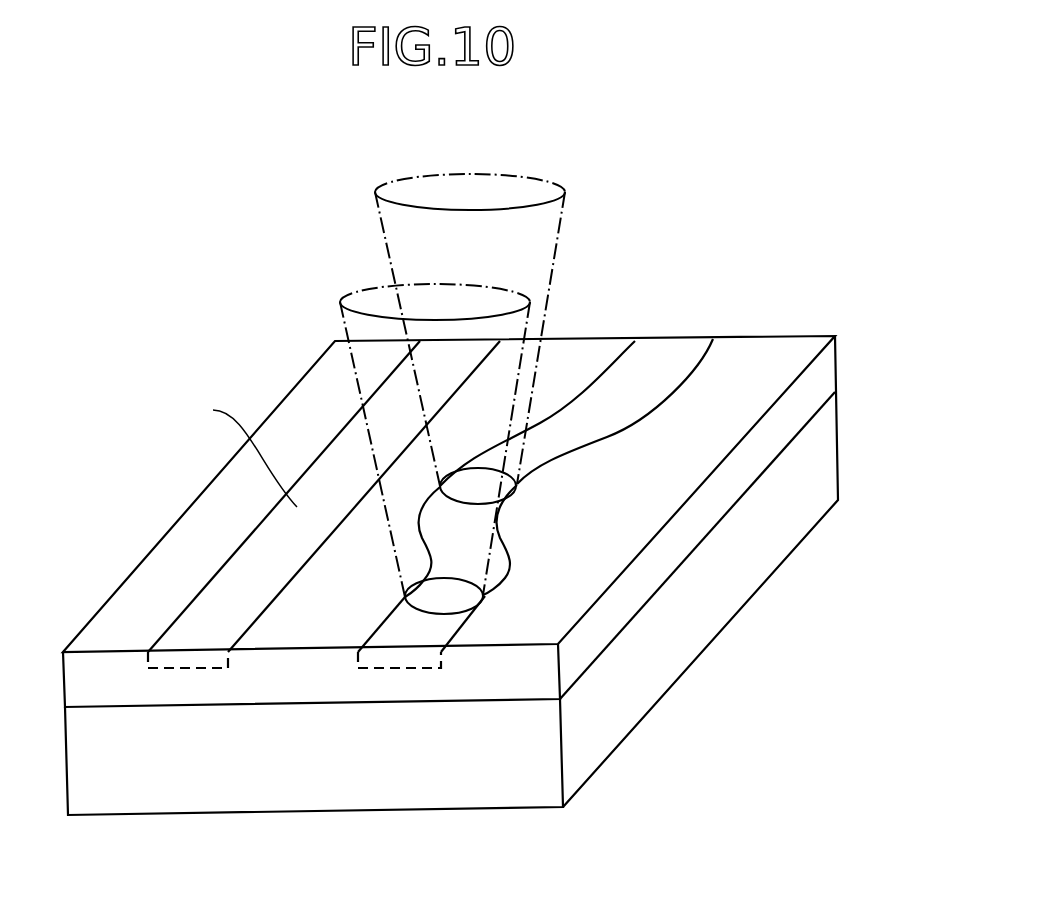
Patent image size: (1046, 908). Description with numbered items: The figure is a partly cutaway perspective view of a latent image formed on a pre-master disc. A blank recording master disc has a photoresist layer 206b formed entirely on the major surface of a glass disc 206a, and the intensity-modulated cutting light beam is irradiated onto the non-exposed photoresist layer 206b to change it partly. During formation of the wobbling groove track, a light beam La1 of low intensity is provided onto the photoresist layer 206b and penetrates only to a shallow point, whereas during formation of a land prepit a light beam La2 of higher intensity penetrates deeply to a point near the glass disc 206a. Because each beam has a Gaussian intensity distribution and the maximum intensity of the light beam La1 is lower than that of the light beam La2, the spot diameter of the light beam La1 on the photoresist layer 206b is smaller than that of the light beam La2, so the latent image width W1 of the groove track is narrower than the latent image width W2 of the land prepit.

The light beam La2 is at (560, 186).
The light beam La1 is at (540, 314).
The latent image width W2 is at (395, 487).
The latent image width W1 is at (358, 597).
The photoresist layer 206b is at (833, 352).
The glass disc 206a is at (830, 420).